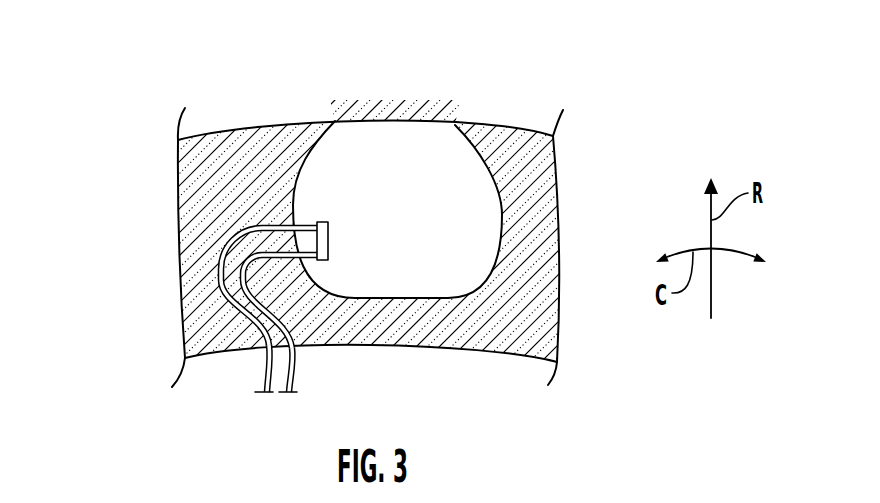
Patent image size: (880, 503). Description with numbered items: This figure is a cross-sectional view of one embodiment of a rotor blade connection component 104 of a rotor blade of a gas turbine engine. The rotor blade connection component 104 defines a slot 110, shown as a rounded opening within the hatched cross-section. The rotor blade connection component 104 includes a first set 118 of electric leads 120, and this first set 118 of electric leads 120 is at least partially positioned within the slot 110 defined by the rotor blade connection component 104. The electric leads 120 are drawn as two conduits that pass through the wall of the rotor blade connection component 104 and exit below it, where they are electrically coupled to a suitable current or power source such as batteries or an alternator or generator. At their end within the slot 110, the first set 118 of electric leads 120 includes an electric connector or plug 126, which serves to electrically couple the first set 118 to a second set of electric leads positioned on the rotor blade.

The rotor blade connection component 104 is at (407, 224).
The slot 110 is at (407, 155).
The first set of electric leads 118 is at (312, 368).
The electric leads 120 is at (315, 288).
The electric connector or plug 126 is at (329, 240).